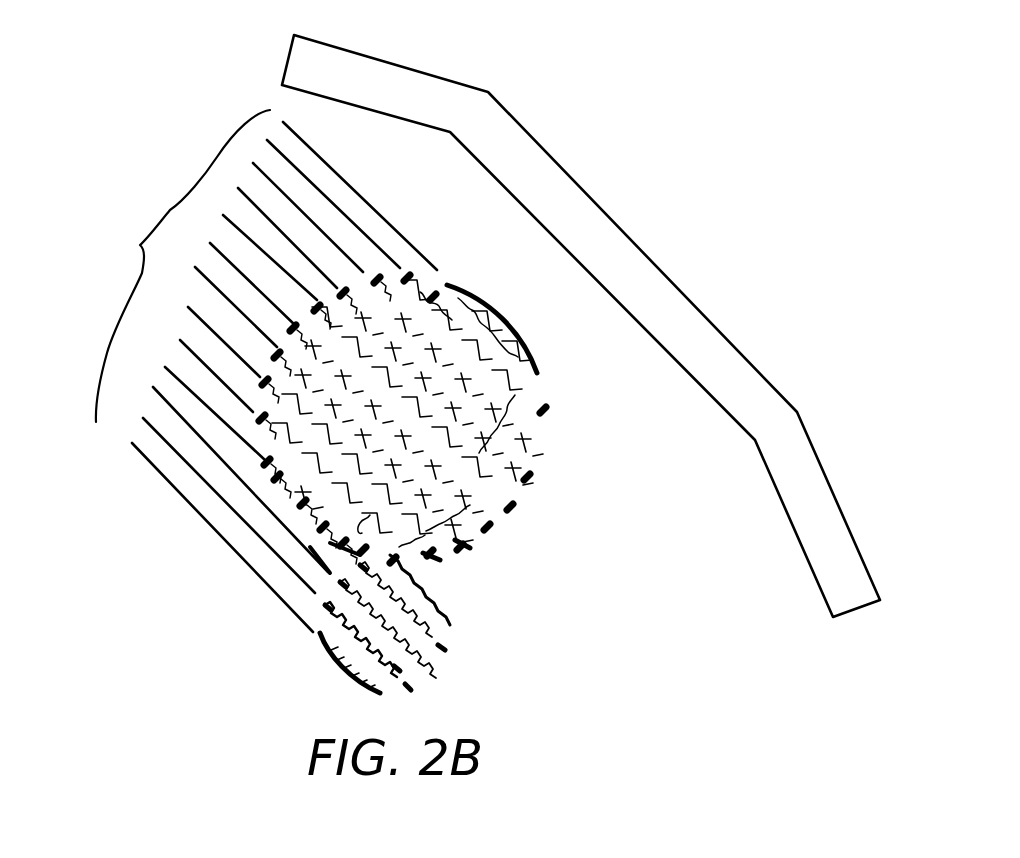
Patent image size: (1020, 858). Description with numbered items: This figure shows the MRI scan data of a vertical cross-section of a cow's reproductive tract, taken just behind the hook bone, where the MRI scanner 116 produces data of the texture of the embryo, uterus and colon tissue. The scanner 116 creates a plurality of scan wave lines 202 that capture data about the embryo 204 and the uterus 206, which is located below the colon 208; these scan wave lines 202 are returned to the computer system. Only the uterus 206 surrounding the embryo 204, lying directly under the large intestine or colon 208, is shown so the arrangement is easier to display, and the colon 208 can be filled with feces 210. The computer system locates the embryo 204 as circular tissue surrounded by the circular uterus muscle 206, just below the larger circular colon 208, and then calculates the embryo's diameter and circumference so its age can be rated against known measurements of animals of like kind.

The scanner 116 is at (620, 248).
The scan wave lines 202 is at (254, 371).
The embryo 204 is at (382, 657).
The uterus 206 is at (443, 648).
The colon 208 is at (522, 470).
The feces 210 is at (462, 407).